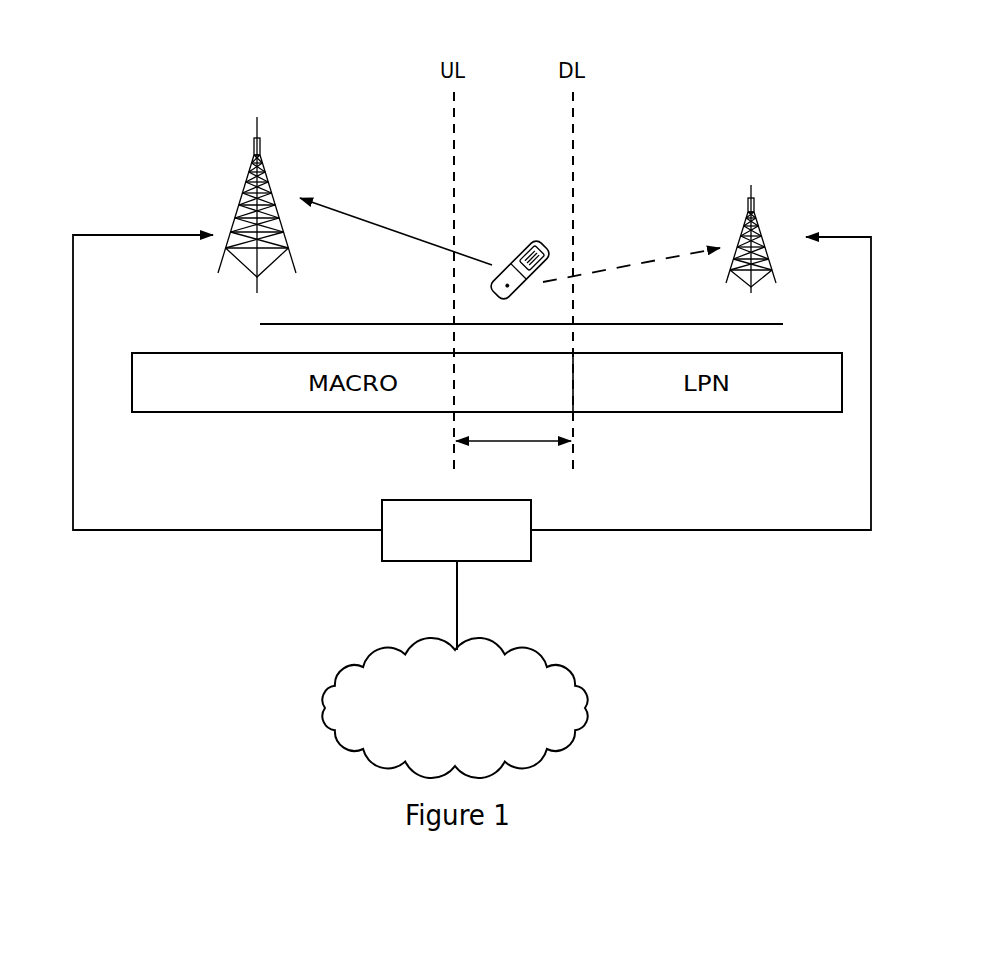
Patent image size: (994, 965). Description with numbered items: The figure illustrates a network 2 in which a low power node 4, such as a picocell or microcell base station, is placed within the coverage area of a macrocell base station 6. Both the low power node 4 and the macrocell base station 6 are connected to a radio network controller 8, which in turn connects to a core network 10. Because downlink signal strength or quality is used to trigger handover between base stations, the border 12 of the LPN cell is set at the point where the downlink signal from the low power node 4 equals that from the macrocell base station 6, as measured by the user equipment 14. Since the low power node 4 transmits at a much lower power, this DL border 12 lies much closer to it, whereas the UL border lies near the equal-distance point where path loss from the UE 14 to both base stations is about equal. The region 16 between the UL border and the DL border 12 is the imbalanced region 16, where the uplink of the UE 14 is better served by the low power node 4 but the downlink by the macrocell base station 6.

The network 2 is at (292, 90).
The low power node 4 is at (746, 212).
The macrocell base station 6 is at (252, 162).
The radio network controller 8 is at (404, 499).
The core network 10 is at (330, 680).
The border 12 is at (575, 142).
The user equipment 14 is at (530, 245).
The imbalanced region 16 is at (531, 445).